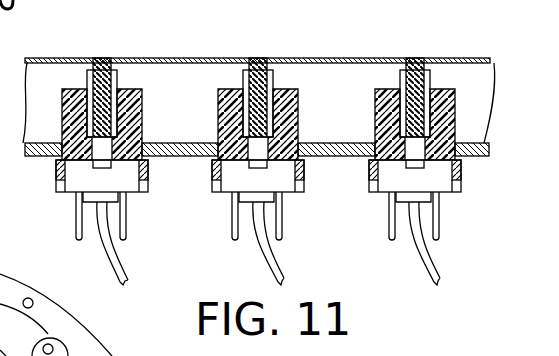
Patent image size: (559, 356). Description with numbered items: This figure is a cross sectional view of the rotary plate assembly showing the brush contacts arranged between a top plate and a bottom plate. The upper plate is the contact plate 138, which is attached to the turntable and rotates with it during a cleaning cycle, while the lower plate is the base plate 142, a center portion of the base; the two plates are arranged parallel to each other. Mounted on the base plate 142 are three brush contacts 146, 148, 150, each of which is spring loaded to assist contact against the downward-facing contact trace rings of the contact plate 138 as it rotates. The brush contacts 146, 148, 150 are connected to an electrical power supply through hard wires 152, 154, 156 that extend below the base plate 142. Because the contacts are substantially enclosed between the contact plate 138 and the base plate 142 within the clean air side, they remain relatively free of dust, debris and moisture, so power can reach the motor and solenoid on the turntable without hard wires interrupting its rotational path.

The contact plate 138 is at (460, 58).
The base plate 142 is at (474, 156).
The brush contact 146 is at (100, 61).
The brush contact 148 is at (263, 60).
The brush contact 150 is at (415, 61).
The hard wire 152 is at (113, 253).
The hard wire 154 is at (283, 273).
The hard wire 156 is at (424, 248).